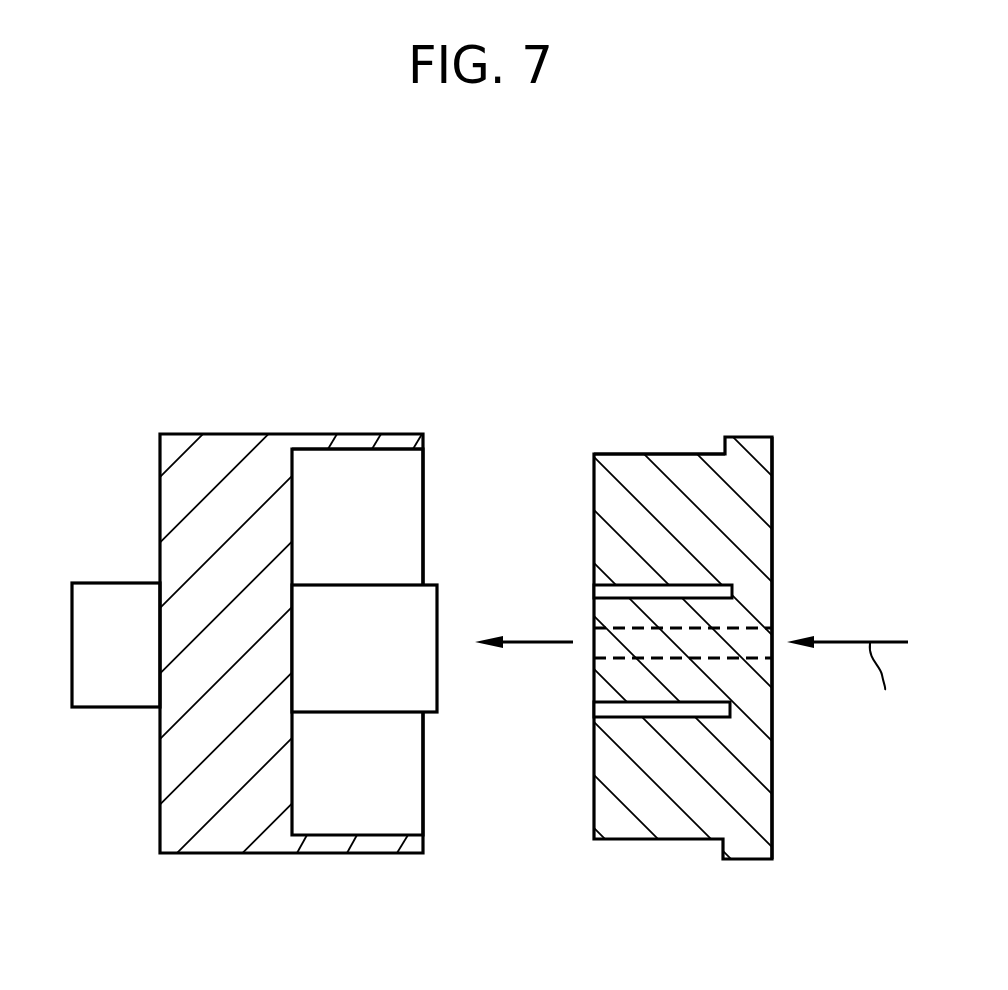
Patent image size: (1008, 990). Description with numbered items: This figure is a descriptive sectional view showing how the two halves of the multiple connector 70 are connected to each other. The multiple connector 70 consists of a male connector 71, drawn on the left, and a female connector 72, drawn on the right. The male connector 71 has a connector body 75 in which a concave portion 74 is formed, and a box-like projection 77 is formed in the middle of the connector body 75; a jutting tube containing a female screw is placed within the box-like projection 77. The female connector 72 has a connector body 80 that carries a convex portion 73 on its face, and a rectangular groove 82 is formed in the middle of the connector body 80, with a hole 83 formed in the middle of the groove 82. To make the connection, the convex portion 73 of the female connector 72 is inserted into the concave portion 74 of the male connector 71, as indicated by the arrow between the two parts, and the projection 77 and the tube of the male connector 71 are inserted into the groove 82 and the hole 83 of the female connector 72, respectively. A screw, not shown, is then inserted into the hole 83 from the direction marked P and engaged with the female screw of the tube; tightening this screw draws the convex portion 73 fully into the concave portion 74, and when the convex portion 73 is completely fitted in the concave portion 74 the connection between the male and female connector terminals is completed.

The multiple connector 70 is at (424, 330).
The male connector 71 is at (294, 400).
The female connector 72 is at (793, 488).
The convex portion 73 is at (663, 455).
The concave portion 74 is at (390, 450).
The connector body 75 is at (160, 462).
The box-like projection 77 is at (378, 597).
The connector body 80 is at (772, 782).
The rectangular groove 82 is at (633, 718).
The hole 83 is at (737, 628).